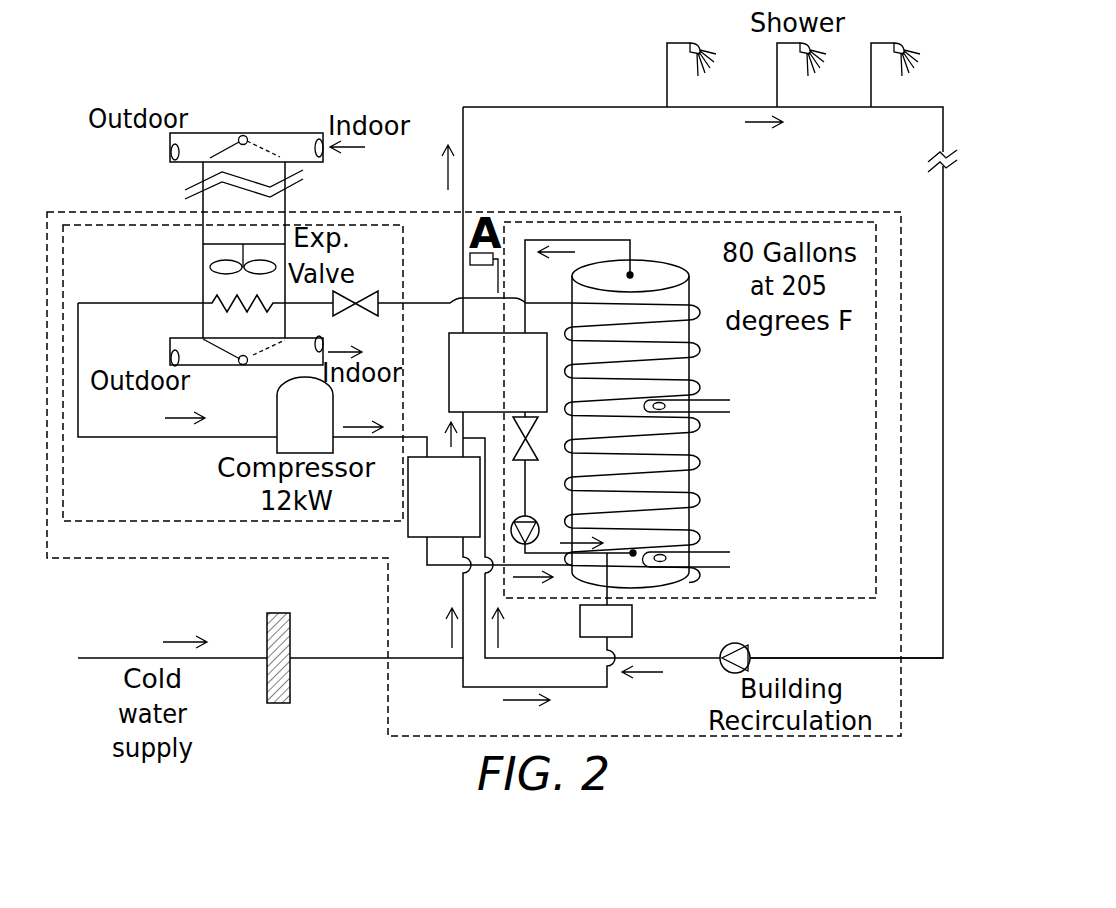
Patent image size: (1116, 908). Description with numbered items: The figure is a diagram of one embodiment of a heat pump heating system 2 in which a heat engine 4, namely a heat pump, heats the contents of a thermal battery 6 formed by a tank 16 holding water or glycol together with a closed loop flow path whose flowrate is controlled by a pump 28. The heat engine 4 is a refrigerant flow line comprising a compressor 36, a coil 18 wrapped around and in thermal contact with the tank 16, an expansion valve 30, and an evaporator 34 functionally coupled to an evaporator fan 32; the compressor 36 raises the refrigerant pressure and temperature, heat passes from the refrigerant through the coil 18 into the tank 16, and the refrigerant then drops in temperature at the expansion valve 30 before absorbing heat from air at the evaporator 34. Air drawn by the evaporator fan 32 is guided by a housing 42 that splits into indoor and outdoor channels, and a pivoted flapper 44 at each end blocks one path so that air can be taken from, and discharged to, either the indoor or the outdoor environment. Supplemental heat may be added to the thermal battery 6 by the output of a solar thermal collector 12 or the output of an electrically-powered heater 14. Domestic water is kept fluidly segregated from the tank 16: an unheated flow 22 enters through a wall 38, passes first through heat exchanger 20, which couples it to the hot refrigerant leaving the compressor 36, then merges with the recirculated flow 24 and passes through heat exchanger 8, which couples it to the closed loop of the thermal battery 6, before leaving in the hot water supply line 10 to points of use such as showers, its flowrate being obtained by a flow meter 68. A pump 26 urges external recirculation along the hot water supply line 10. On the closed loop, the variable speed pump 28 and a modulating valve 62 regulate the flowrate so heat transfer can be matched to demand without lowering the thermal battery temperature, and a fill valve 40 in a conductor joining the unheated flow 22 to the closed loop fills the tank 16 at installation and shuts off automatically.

The heating system 2 is at (78, 212).
The heat engine 4 is at (118, 521).
The thermal battery 6 is at (700, 599).
The heat exchanger 8 is at (470, 382).
The hot water supply line 10 is at (620, 107).
The output of solar thermal collector 12 is at (706, 398).
The output of electrically-powered heater 14 is at (705, 550).
The tank 16 is at (667, 278).
The coil 18 is at (698, 457).
The heat exchanger 20 is at (409, 537).
The unheated flow 22 is at (123, 643).
The recirculated flow 24 is at (818, 657).
The pump 26 is at (737, 648).
The pump 28 is at (528, 517).
The expansion valve 30 is at (362, 298).
The evaporator fan 32 is at (212, 269).
The evaporator 34 is at (212, 303).
The compressor 36 is at (320, 432).
The wall 38 is at (292, 682).
The fill valve 40 is at (622, 634).
The housing 42 is at (203, 330).
The flapper 44 is at (215, 141).
The modulating valve 62 is at (530, 460).
The flow meter 68 is at (480, 265).